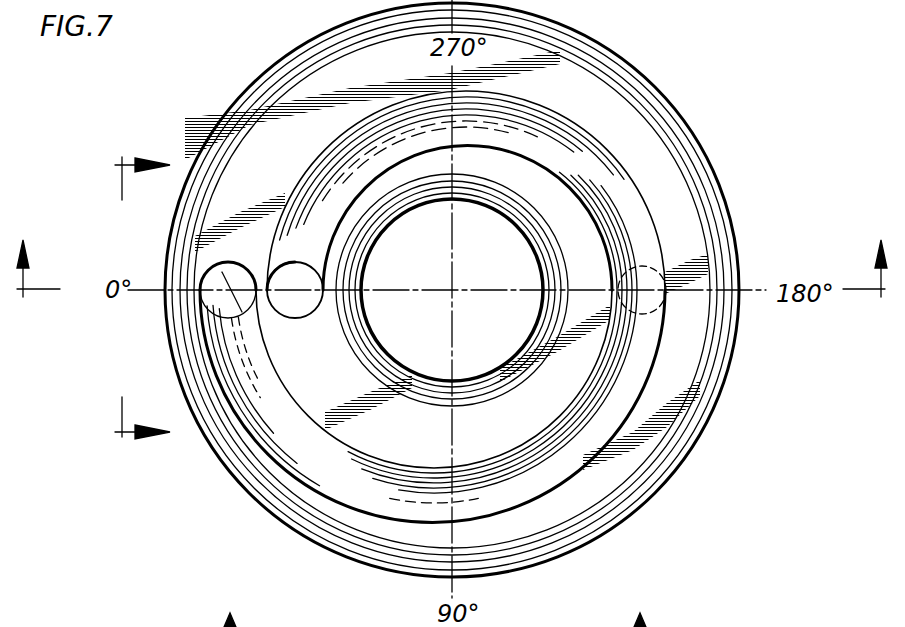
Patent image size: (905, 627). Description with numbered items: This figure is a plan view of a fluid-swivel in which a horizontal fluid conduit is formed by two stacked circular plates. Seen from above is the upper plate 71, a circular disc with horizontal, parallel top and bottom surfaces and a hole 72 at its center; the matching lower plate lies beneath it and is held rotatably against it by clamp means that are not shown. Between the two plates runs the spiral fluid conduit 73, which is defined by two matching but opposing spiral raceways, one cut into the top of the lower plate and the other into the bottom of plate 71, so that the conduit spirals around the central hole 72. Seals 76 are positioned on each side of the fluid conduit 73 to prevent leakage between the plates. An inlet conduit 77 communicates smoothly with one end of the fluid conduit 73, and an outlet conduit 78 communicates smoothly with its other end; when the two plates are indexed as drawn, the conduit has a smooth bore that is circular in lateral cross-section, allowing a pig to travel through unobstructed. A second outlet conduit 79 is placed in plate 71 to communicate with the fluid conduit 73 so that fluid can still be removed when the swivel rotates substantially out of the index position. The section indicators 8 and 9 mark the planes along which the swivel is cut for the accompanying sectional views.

The plate 71 is at (618, 105).
The hole 72 is at (490, 265).
The spiral fluid conduit 73 is at (642, 375).
The seals 76 is at (685, 178).
The inlet conduit 77 is at (303, 318).
The outlet conduit 78 is at (226, 262).
The second outlet conduit 79 is at (655, 268).
The section line 8 is at (452, 421).
The section line 9 is at (142, 300).